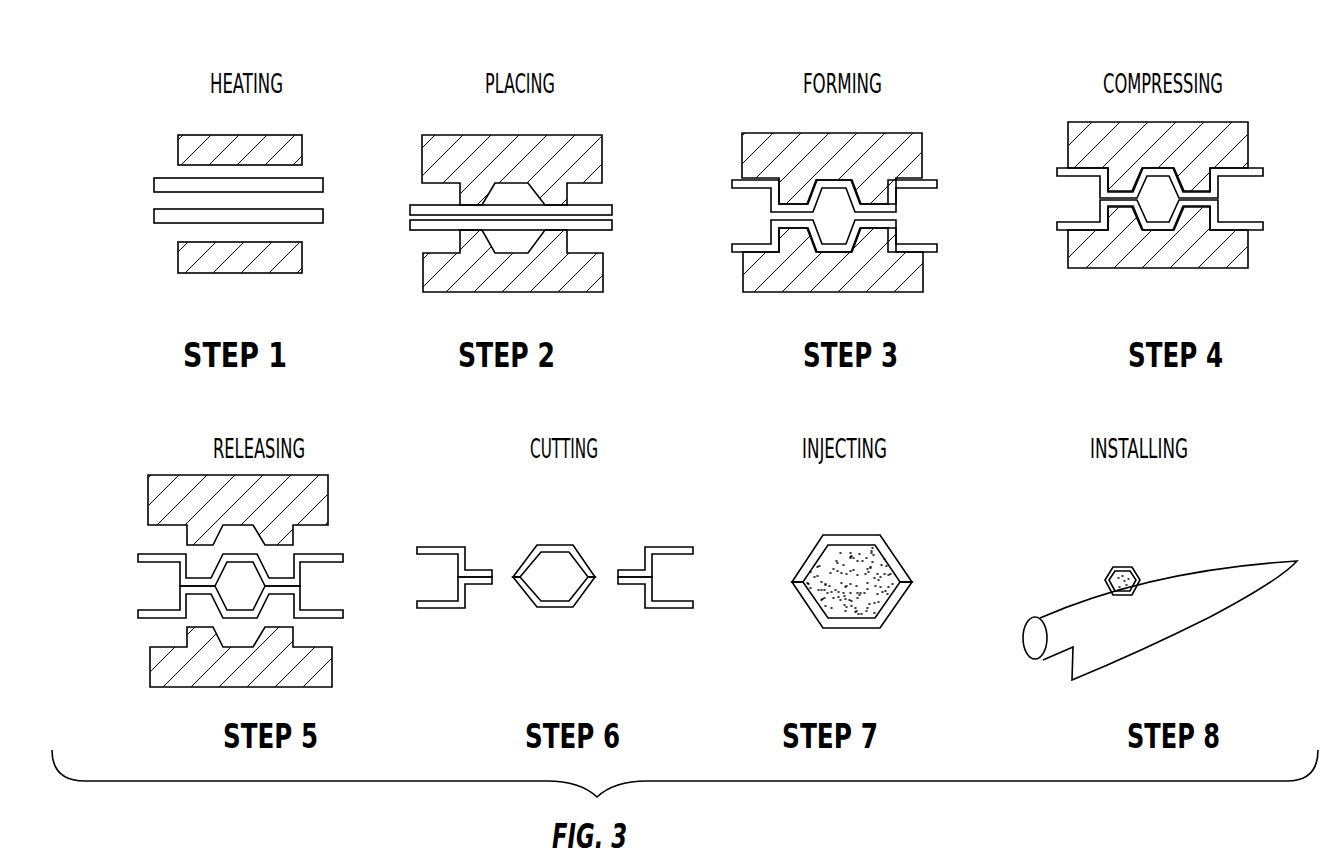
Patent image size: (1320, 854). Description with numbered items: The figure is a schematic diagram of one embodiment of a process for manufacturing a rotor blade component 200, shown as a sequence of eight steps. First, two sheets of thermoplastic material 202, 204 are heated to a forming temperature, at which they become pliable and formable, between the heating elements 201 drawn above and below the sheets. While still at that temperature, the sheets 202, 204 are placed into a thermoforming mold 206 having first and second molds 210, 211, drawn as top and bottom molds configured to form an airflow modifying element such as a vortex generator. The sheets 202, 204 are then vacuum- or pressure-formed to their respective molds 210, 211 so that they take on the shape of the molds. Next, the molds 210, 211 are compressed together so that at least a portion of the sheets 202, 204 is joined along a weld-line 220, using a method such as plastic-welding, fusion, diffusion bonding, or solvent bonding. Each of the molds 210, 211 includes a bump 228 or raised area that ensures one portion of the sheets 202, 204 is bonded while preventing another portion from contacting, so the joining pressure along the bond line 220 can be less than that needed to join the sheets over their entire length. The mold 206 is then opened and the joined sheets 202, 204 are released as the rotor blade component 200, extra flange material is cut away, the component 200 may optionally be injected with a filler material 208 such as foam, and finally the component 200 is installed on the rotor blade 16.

The rotor blade 16 is at (1218, 570).
The rotor blade component 200 is at (536, 544).
The heating tool 201 is at (278, 136).
The first sheet of thermoplastic material 202 is at (153, 187).
The second sheet of thermoplastic material 204 is at (168, 226).
The thermoforming mold 206 is at (430, 131).
The filler material 208 is at (870, 575).
The first mold 210 is at (572, 135).
The second mold 211 is at (455, 288).
The weld-line 220 is at (1193, 207).
The bump 228 is at (468, 192).